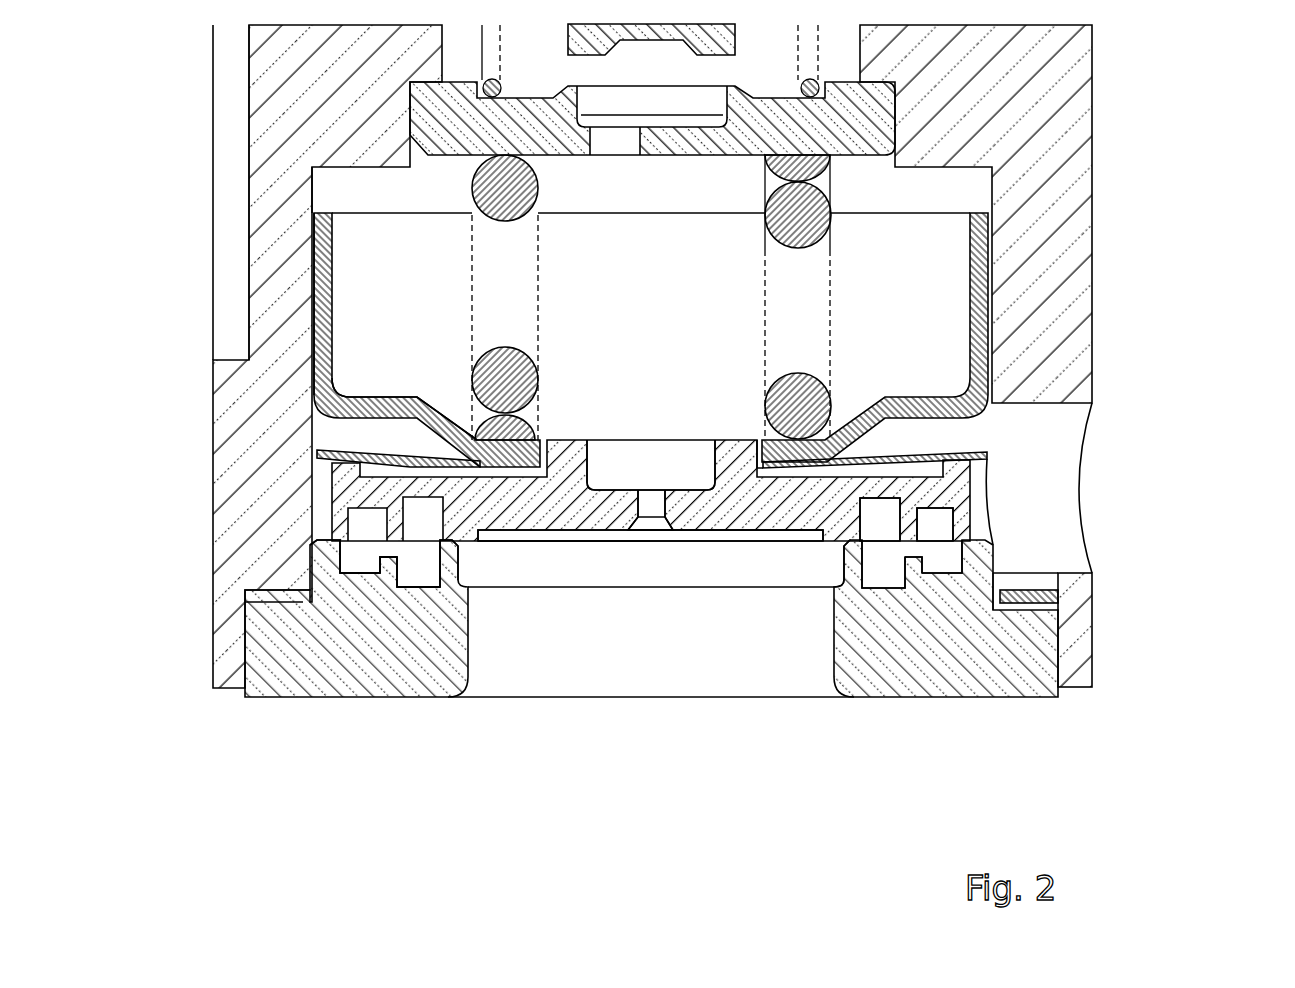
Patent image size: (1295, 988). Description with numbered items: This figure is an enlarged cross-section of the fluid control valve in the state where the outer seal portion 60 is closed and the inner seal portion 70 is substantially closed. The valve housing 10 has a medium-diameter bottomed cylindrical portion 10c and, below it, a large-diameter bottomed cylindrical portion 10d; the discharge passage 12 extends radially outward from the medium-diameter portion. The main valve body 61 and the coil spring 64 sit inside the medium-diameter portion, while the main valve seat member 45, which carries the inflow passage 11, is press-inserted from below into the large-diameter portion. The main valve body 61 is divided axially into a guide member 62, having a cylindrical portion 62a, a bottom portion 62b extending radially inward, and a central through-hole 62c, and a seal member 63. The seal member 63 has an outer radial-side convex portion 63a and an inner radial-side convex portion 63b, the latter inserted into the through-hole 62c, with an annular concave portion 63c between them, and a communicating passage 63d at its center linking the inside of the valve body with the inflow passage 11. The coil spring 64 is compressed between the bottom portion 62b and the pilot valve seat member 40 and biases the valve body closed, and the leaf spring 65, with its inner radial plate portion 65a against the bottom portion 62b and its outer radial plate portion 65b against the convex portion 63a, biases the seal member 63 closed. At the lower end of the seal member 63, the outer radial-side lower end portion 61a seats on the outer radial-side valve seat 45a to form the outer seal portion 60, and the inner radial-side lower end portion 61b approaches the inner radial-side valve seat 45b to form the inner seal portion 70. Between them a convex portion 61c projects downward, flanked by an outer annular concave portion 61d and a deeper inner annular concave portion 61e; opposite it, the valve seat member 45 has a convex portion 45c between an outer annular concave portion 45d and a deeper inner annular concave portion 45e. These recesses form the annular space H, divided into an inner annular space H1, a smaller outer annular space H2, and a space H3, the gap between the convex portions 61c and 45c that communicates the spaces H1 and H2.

The valve housing 10 is at (203, 672).
The medium-diameter bottomed cylindrical portion 10c is at (316, 250).
The large-diameter bottomed cylindrical portion 10d is at (255, 640).
The inflow passage 11 is at (490, 620).
The discharge passage 12 is at (1089, 567).
The pilot valve seat member 40 is at (872, 114).
The main valve seat member 45 is at (284, 703).
The outer radial-side valve seat 45a is at (1000, 506).
The inner radial-side valve seat 45b is at (820, 522).
The convex portion 45c is at (927, 622).
The annular concave portion 45d is at (944, 562).
The annular concave portion 45e is at (866, 572).
The outer seal portion 60 is at (1236, 490).
The main valve body 61 is at (100, 405).
The outer radial-side lower end portion 61a is at (1000, 560).
The inner radial-side lower end portion 61b is at (836, 531).
The convex portion 61c is at (876, 520).
The annular concave portion 61d is at (935, 520).
The annular concave portion 61e is at (884, 522).
The guide member 62 is at (312, 399).
The cylindrical portion 62a is at (318, 326).
The bottom portion 62b is at (390, 398).
The through-hole 62c is at (471, 400).
The seal member 63 is at (315, 512).
The outer radial-side convex portion 63a is at (1084, 470).
The inner radial-side convex portion 63b is at (567, 440).
The annular concave portion 63c is at (788, 440).
The communicating passage 63d is at (655, 532).
The coil spring 64 is at (808, 200).
The leaf spring 65 is at (992, 450).
The inner radial plate portion 65a is at (806, 456).
The outer radial plate portion 65b is at (985, 380).
The inner seal portion 70 is at (845, 812).
The annular space H is at (445, 812).
The annular space H1 is at (421, 560).
The annular space H2 is at (363, 572).
The space H3 is at (389, 566).